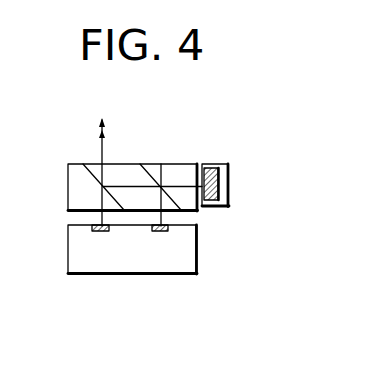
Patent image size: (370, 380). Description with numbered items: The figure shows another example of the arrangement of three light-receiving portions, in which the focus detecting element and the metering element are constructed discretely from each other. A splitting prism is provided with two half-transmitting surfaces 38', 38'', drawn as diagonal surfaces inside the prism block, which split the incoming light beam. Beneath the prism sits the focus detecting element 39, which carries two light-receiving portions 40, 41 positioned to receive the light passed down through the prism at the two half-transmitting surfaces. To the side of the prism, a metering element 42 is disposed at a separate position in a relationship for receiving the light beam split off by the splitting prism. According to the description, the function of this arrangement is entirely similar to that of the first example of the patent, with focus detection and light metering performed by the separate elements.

The half-transmitting surface 38' is at (90, 156).
The half-transmitting surface 38'' is at (159, 156).
The focus detecting element 39 is at (136, 260).
The light-receiving portion 40 is at (93, 227).
The light-receiving portion 41 is at (168, 227).
The metering element 42 is at (228, 185).